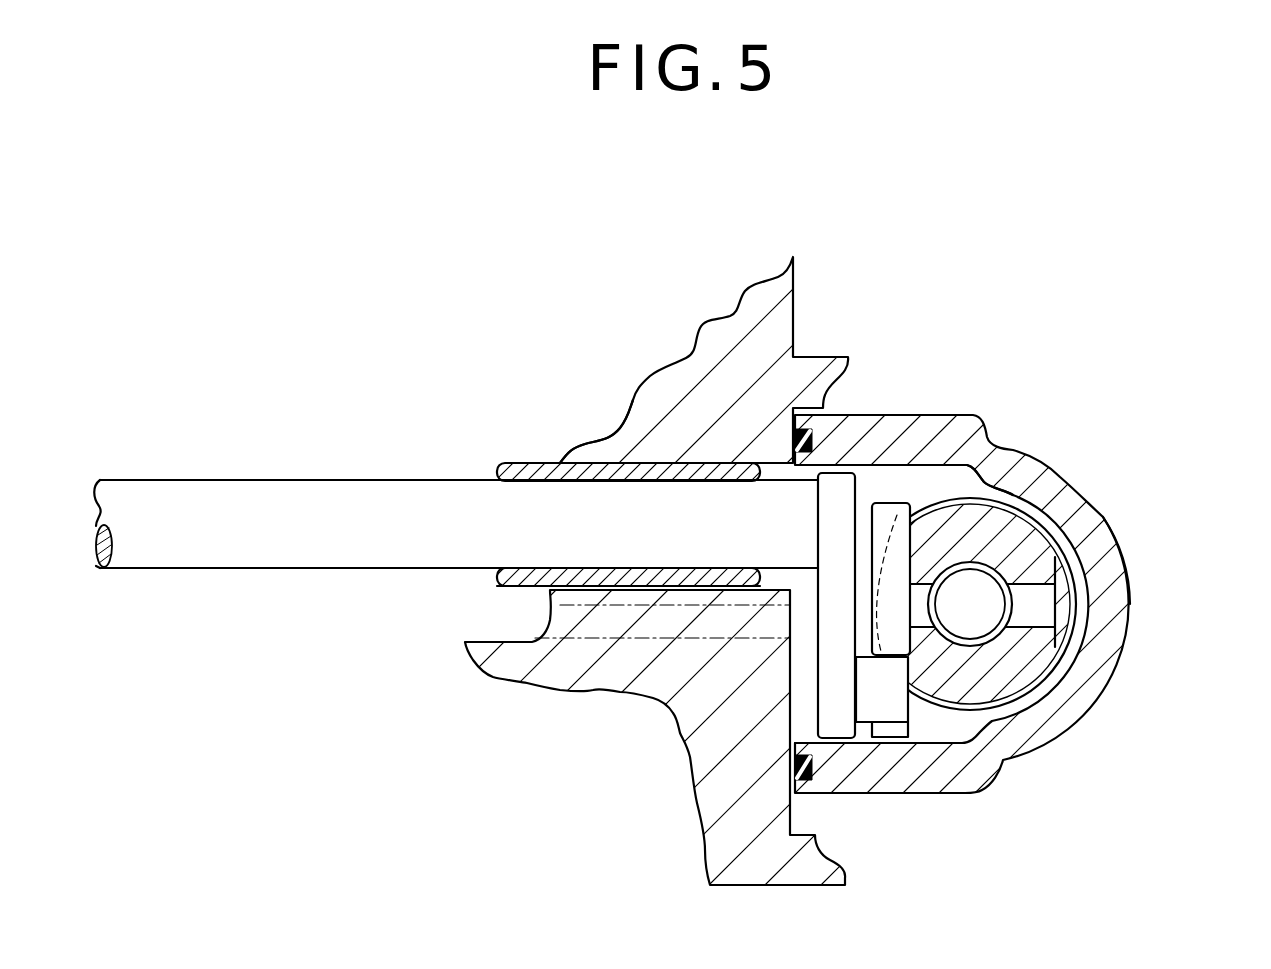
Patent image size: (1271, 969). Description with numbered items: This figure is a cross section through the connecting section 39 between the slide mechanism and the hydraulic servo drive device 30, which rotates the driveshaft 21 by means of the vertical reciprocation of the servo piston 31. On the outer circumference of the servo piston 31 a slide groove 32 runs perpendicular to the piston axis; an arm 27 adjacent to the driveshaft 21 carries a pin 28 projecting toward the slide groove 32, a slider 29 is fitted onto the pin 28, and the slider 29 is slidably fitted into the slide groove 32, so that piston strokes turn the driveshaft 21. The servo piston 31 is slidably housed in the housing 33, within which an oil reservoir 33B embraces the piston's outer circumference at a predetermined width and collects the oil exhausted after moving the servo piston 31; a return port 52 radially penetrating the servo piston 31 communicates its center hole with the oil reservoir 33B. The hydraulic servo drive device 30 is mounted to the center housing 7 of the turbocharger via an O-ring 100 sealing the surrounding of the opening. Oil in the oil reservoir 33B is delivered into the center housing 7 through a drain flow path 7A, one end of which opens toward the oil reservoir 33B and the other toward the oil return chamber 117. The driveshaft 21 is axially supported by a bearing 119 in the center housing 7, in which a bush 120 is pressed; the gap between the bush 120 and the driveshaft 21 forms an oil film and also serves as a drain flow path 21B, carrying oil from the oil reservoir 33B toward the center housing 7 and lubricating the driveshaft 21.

The center housing 7 is at (777, 317).
The drain flow path 7A is at (628, 638).
The driveshaft 21 is at (158, 540).
The drain flow path 21B is at (497, 480).
The arm 27 is at (827, 652).
The pin 28 is at (893, 720).
The slider 29 is at (888, 523).
The hydraulic servo drive device 30 is at (1076, 440).
The servo piston 31 is at (1013, 680).
The slide groove 32 is at (977, 727).
The housing 33 is at (1080, 517).
The oil reservoir 33B is at (920, 494).
The connecting section 39 is at (790, 707).
The return port 52 is at (1033, 587).
The O-ring 100 is at (790, 745).
The oil return chamber 117 is at (457, 594).
The bearing 119 is at (633, 447).
The bush 120 is at (527, 470).